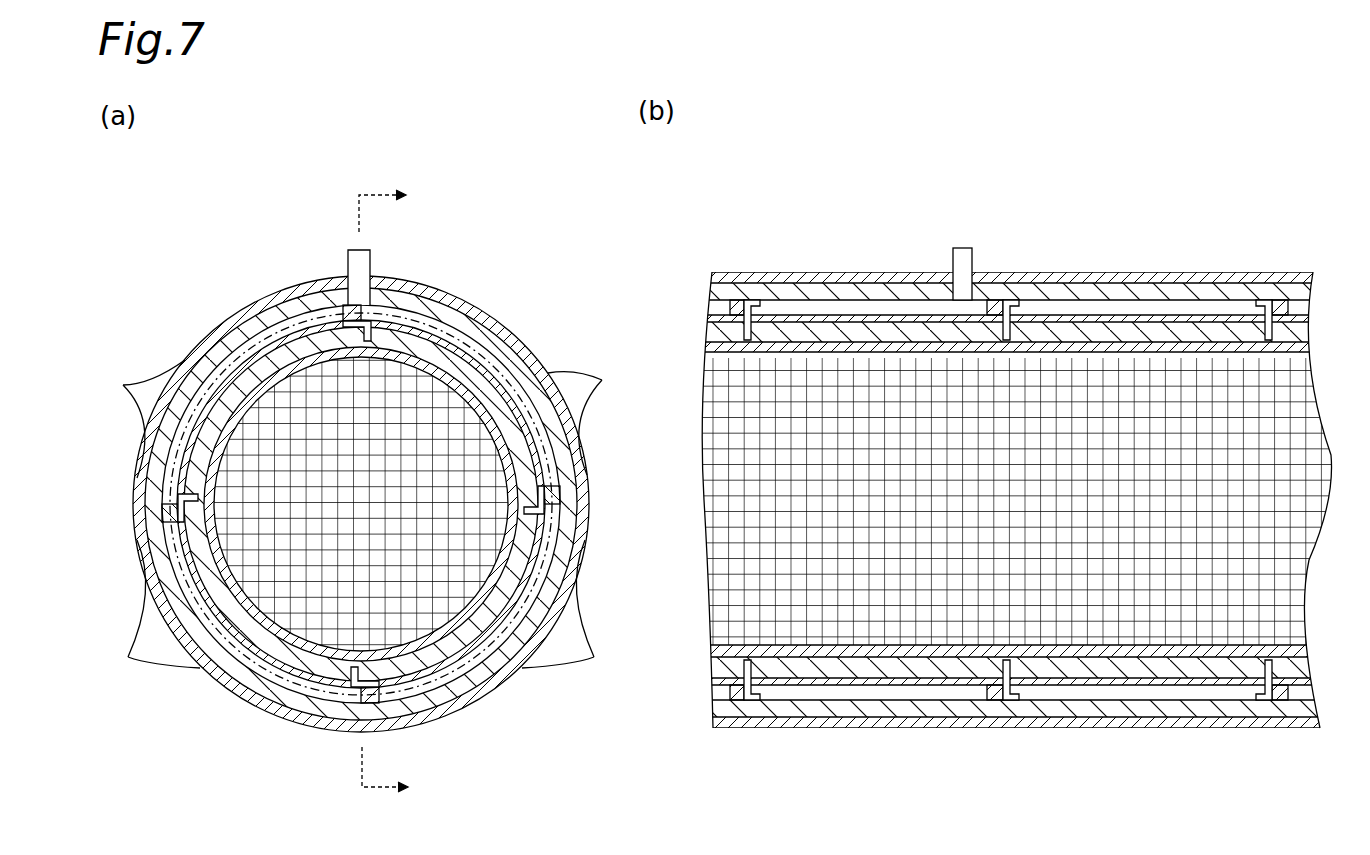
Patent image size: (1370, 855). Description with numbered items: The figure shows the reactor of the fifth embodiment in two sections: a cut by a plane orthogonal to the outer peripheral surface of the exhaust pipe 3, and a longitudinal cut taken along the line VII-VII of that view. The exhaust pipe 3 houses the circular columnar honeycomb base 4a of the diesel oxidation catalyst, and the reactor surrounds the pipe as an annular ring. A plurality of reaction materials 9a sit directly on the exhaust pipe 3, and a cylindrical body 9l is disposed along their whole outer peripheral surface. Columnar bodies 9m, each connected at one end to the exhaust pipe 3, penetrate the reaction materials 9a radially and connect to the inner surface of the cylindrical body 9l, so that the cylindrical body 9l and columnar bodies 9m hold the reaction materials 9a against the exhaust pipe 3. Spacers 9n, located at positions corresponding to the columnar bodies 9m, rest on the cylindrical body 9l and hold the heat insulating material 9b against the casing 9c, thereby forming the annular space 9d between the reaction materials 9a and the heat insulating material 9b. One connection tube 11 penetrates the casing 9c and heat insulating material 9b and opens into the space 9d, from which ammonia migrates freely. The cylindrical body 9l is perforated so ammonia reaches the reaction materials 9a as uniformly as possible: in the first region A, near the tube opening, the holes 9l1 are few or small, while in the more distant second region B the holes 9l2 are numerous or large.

The exhaust pipe 3 is at (330, 665).
The honeycomb base 4a is at (282, 688).
The reaction material 9a is at (445, 340).
The heat insulating material 9b is at (153, 506).
The casing 9c is at (220, 337).
The space 9d is at (150, 482).
The cylindrical body 9l is at (258, 315).
The holes in first region 9l1 is at (123, 385).
The holes in second region 9l2 is at (128, 657).
The columnar body 9m is at (375, 327).
The spacer 9n is at (362, 308).
The connection tube 11 is at (348, 258).
The first region A is at (282, 285).
The second region B is at (250, 690).
The section line VII- VII is at (400, 491).